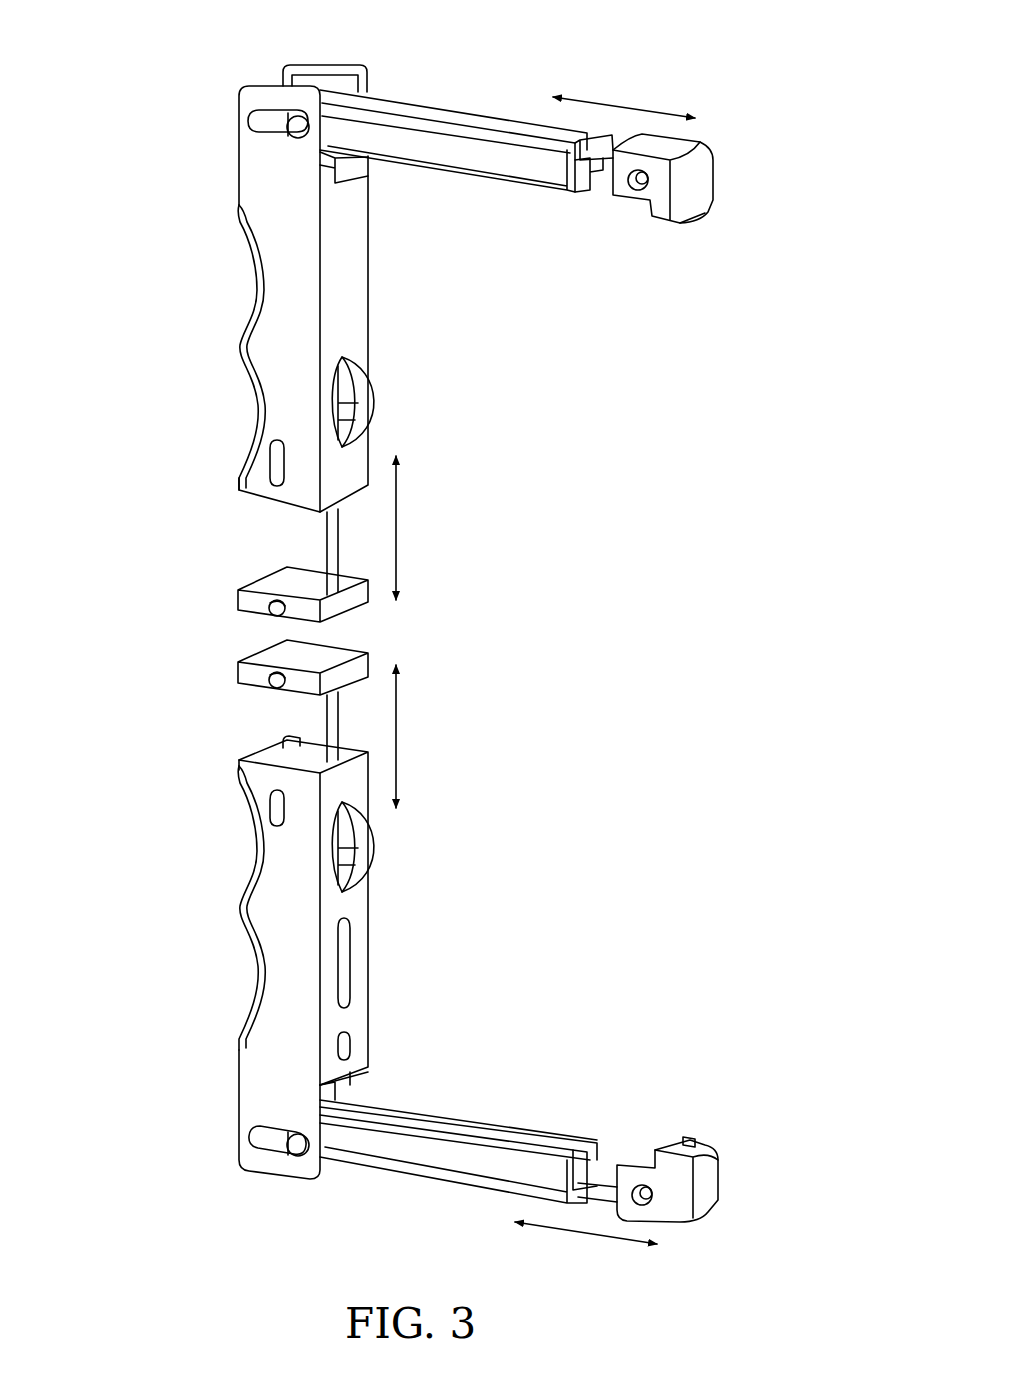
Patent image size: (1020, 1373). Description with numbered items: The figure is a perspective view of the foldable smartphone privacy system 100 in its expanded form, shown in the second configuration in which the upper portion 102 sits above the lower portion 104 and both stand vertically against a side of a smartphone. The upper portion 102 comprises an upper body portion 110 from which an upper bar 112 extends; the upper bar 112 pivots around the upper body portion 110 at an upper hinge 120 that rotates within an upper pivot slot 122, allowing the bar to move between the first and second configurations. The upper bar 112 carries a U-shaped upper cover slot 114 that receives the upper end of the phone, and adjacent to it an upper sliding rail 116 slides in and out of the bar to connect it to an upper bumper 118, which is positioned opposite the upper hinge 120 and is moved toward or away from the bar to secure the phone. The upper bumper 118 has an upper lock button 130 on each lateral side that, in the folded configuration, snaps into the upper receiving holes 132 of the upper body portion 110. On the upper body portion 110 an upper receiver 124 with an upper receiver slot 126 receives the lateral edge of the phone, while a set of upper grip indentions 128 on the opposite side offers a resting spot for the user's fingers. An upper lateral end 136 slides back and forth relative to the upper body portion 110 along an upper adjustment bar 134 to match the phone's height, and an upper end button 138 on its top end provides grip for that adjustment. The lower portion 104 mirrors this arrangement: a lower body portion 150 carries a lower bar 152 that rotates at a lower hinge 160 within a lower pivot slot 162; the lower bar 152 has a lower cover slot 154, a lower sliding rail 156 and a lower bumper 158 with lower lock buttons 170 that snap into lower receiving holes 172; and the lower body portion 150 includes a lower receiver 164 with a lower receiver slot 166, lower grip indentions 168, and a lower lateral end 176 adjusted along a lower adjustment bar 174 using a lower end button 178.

The foldable smartphone privacy system 100 is at (154, 31).
The upper portion 102 is at (660, 45).
The lower portion 104 is at (224, 1242).
The upper body portion 110 is at (350, 236).
The upper bar 112 is at (424, 148).
The upper cover slot 114 is at (586, 182).
The upper sliding rail 116 is at (608, 140).
The upper bumper 118 is at (702, 178).
The upper hinge 120 is at (296, 134).
The upper pivot slot 122 is at (266, 118).
The upper receiver 124 is at (373, 378).
The upper receiver slot 126 is at (370, 407).
The upper grip indentions 128 is at (257, 418).
The upper lock button 130 is at (638, 190).
The upper receiving holes 132 is at (278, 463).
The upper adjustment bar 134 is at (330, 525).
The upper lateral end 136 is at (258, 586).
The upper end button 138 is at (272, 612).
The lower body portion 150 is at (262, 1105).
The lower bar 152 is at (380, 1160).
The lower cover slot 154 is at (583, 1150).
The lower sliding rail 156 is at (612, 1186).
The lower bumper 158 is at (708, 1178).
The lower hinge 160 is at (298, 1150).
The lower pivot slot 162 is at (262, 1138).
The lower receiver 164 is at (373, 823).
The lower receiver slot 166 is at (370, 852).
The lower grip indentions 168 is at (171, 908).
The lower lock button 170 is at (645, 1200).
The lower receiving holes 172 is at (273, 792).
The lower adjustment bar 174 is at (338, 738).
The lower lateral end 176 is at (364, 666).
The lower end button 178 is at (272, 684).